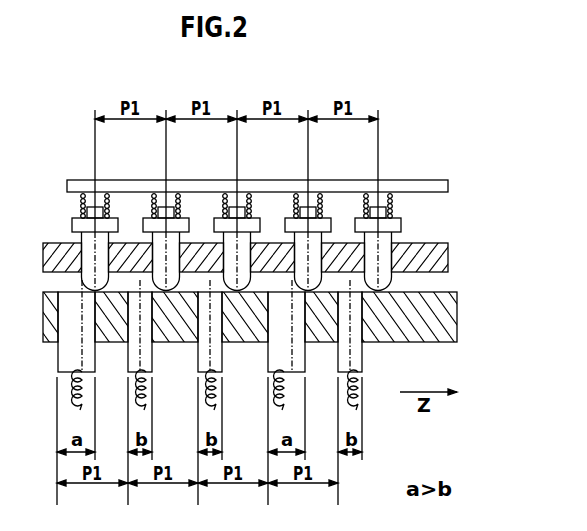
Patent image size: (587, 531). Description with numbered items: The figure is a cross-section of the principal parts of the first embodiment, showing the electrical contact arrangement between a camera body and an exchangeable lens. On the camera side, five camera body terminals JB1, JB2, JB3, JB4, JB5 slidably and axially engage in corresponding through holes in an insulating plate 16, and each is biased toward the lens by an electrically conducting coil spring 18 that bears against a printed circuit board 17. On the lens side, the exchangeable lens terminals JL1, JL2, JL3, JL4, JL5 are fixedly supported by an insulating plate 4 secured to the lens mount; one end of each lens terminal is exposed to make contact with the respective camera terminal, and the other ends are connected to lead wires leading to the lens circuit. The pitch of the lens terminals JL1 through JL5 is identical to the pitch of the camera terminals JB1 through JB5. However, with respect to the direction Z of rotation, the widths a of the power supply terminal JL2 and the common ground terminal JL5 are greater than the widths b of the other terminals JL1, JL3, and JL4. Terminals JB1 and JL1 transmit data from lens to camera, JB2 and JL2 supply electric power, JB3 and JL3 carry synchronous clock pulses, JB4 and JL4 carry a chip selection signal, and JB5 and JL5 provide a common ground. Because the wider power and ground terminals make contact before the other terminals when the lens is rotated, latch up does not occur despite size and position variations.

The insulating plate 4 is at (446, 315).
The insulating plate 16 is at (446, 258).
The printed circuit board 17 is at (422, 181).
The electrically conducting coil springs 18 is at (356, 197).
The camera body terminal JB1 is at (386, 258).
The camera body terminal JB2 is at (316, 258).
The camera body terminal JB3 is at (245, 258).
The camera body terminal JB4 is at (174, 258).
The camera body terminal JB5 is at (103, 258).
The exchangeable lens terminal JL1 is at (357, 356).
The power supply terminal JL2 is at (300, 356).
The exchangeable lens terminal JL3 is at (217, 356).
The exchangeable lens terminal JL4 is at (147, 356).
The common ground terminal JL5 is at (90, 356).